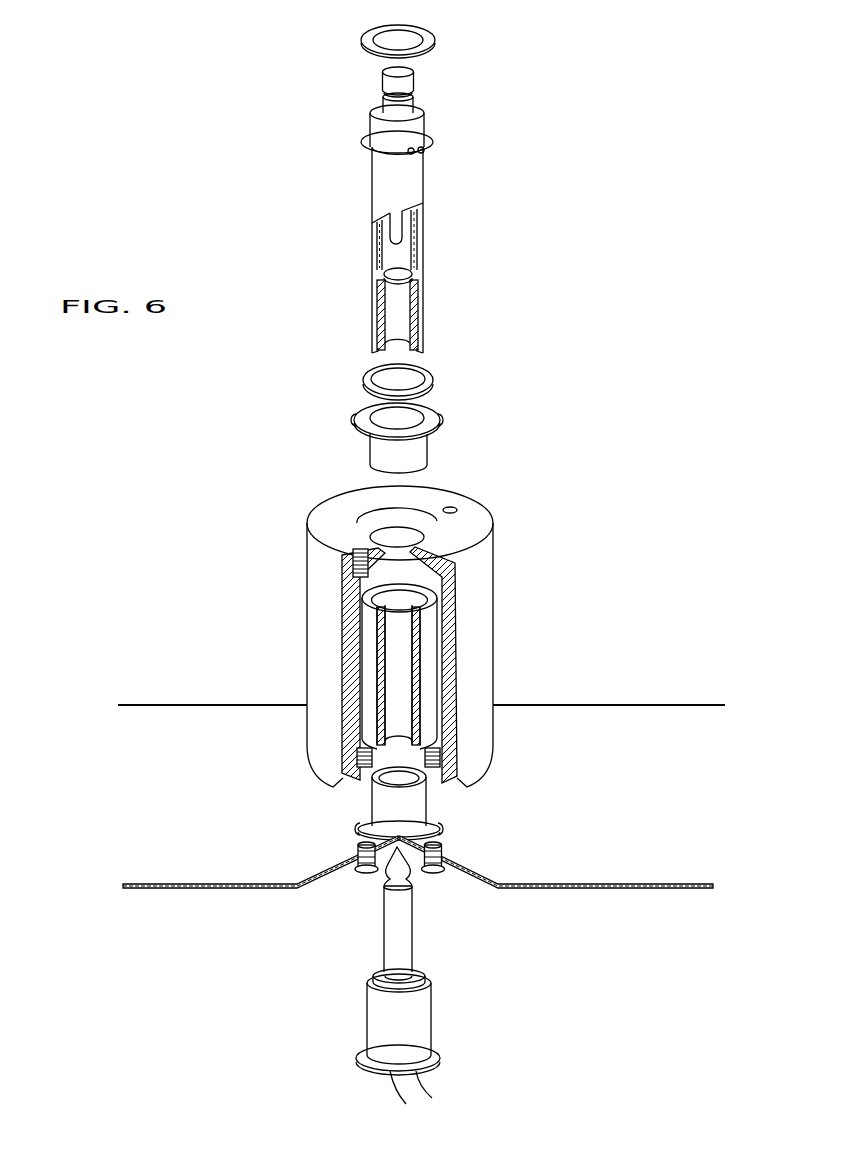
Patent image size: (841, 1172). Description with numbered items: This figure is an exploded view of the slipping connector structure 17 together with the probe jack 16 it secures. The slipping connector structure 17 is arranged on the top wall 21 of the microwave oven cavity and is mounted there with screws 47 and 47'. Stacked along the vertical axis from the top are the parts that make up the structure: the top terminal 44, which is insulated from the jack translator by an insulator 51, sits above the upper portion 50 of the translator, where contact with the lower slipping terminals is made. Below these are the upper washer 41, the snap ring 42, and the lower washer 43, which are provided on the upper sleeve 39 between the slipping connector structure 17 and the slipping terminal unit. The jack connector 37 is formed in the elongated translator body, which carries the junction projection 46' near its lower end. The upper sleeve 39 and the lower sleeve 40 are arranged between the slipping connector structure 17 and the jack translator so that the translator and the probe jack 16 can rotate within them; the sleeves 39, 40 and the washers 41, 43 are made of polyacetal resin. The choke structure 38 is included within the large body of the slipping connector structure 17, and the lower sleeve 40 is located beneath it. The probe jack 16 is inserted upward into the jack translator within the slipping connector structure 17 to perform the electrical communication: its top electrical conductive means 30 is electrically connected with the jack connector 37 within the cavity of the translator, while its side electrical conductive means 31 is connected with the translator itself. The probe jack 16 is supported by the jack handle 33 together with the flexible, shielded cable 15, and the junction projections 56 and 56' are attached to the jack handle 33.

The upper washer 41 is at (434, 34).
The top terminal 44 is at (415, 78).
The insulator 51 is at (405, 98).
The upper portion of the jack translator 50 is at (411, 99).
The snap ring 42 is at (360, 146).
The jack connector 37 is at (399, 226).
The junction projection 46' is at (396, 363).
The lower washer 43 is at (433, 373).
The upper sleeve 39 is at (437, 410).
The slipping connector structure 17 is at (318, 603).
The choke structure 38 is at (436, 598).
The lower sleeve 40 is at (440, 812).
The top wall 21 is at (623, 859).
The screw 47 is at (342, 903).
The screw 47' is at (460, 903).
The top electrical conductive means 30 is at (395, 856).
The side electrical conductive means 31 is at (385, 950).
The probe jack 16 is at (415, 937).
The junction projection 56' is at (436, 989).
The junction projection 56 is at (372, 1024).
The jack handle 33 is at (430, 1025).
The flexible, shielded cable 15 is at (428, 1088).